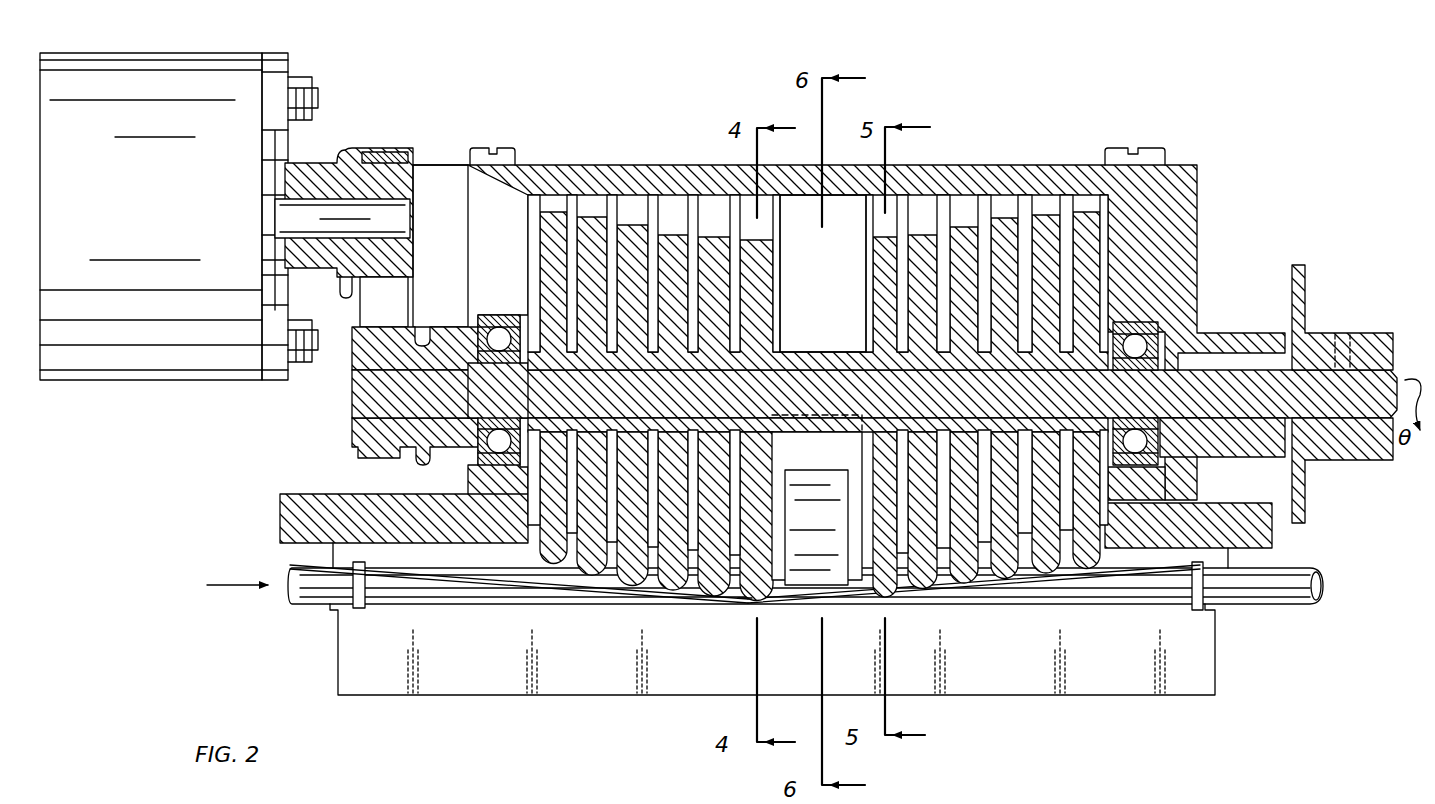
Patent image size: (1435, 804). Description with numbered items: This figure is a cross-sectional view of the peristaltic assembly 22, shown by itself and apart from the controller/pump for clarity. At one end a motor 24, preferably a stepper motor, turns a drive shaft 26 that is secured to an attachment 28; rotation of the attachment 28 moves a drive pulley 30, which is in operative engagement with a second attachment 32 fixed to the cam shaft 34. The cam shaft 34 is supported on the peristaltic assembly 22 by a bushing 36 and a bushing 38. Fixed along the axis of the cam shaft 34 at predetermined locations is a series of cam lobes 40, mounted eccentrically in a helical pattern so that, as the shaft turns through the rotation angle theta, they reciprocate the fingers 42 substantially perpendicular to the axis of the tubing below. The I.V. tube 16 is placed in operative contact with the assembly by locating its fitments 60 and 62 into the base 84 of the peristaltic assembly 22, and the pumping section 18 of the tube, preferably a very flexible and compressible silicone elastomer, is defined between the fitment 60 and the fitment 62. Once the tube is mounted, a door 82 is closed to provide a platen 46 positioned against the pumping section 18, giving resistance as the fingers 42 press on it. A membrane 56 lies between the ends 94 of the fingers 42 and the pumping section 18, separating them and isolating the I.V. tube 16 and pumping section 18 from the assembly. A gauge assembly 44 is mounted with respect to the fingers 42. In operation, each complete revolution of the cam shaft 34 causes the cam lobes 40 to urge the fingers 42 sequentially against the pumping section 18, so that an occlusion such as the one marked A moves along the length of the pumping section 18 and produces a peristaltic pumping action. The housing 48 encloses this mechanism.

The I.V. tube 16 is at (295, 600).
The pumping section 18 is at (468, 592).
The peristaltic assembly 22 is at (835, 145).
The motor 24 is at (200, 38).
The drive shaft 26 is at (385, 220).
The attachment 28 is at (390, 182).
The drive pulley 30 is at (378, 160).
The attachment 32 is at (362, 432).
The cam shaft 34 is at (352, 390).
The bushing 36 is at (472, 470).
The bushing 38 is at (1140, 462).
The cam lobes 40 is at (690, 352).
The fingers 42 is at (665, 240).
The gauge assembly 44 is at (820, 572).
The platen 46 is at (598, 592).
The housing 48 is at (1005, 178).
The membrane 56 is at (1002, 568).
The fitment 60 is at (356, 612).
The fitment 62 is at (1196, 618).
The door 82 is at (970, 695).
The base 84 is at (333, 550).
The ends 94 is at (905, 580).
The occlusion A is at (738, 600).